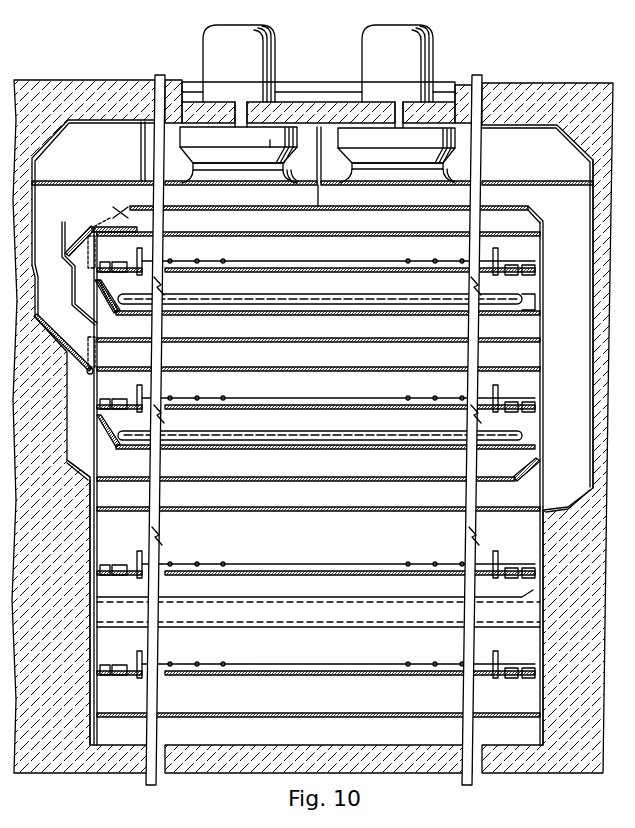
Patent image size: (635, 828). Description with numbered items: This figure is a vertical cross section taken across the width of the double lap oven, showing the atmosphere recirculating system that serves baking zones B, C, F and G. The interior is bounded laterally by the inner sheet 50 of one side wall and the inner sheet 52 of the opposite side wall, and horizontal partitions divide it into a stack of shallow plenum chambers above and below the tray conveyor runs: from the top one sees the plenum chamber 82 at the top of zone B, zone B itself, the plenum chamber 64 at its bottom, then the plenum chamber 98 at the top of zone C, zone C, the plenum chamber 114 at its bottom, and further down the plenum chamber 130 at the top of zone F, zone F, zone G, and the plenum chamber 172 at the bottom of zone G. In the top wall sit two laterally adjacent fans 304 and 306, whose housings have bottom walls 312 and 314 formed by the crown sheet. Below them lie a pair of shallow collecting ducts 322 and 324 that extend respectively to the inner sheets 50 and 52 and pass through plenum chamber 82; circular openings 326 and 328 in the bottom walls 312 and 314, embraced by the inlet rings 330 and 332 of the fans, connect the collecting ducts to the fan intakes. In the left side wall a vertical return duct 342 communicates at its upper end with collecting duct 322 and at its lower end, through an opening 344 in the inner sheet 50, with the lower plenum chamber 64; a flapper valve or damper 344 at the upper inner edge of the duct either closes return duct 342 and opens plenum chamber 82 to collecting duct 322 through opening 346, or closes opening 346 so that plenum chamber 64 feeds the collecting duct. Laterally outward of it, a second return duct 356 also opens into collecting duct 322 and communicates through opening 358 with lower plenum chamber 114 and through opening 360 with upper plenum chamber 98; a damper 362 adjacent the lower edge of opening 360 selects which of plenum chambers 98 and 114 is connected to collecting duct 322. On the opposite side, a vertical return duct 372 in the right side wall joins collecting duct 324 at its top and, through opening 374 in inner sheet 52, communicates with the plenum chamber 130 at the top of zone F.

The fan 304 is at (277, 137).
The fan 306 is at (455, 143).
The bottom wall of housing 312 is at (135, 181).
The bottom wall of housing 314 is at (505, 181).
The collecting duct 322 is at (293, 204).
The collecting duct 324 is at (353, 204).
The circular opening 326 is at (228, 185).
The circular opening 328 is at (410, 186).
The inlet ring 330 is at (282, 174).
The inlet ring 332 is at (443, 174).
The vertical return duct 342 is at (78, 268).
The flapper valve or damper 344 is at (80, 240).
The opening 346 is at (117, 212).
The second return duct 356 is at (39, 297).
The opening 358 is at (91, 460).
The opening 360 is at (97, 357).
The flapper valve or damper 362 is at (65, 348).
The vertical return duct 372 is at (554, 347).
The opening 374 is at (535, 489).
The inner sheet of oven side wall 50 is at (95, 531).
The inner sheet of oven side wall 52 is at (538, 524).
The plenum chamber 82 is at (330, 232).
The zone B is at (312, 259).
The plenum chamber 64 is at (328, 336).
The plenum chamber 98 is at (328, 366).
The zone C is at (312, 396).
The plenum chamber 114 is at (306, 472).
The plenum chamber 130 is at (306, 502).
The zone F is at (308, 549).
The zone G is at (306, 652).
The plenum chamber 172 is at (291, 741).